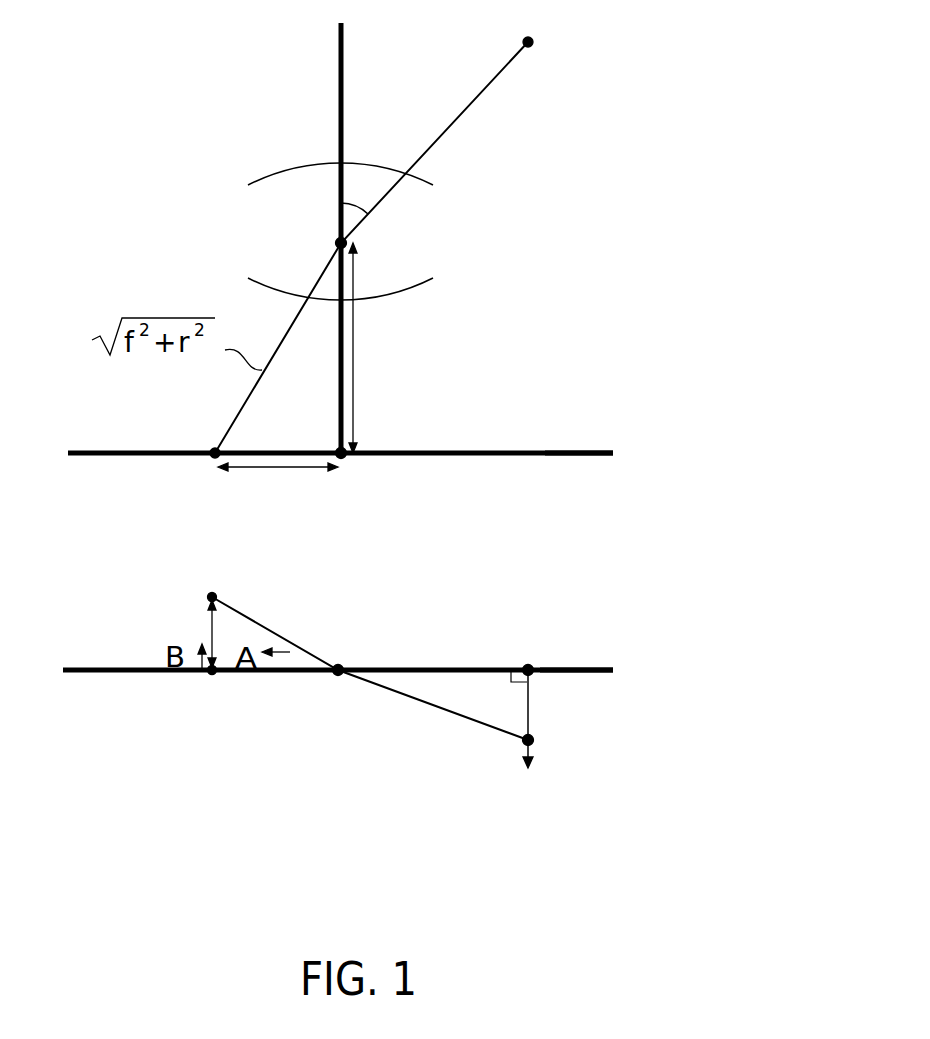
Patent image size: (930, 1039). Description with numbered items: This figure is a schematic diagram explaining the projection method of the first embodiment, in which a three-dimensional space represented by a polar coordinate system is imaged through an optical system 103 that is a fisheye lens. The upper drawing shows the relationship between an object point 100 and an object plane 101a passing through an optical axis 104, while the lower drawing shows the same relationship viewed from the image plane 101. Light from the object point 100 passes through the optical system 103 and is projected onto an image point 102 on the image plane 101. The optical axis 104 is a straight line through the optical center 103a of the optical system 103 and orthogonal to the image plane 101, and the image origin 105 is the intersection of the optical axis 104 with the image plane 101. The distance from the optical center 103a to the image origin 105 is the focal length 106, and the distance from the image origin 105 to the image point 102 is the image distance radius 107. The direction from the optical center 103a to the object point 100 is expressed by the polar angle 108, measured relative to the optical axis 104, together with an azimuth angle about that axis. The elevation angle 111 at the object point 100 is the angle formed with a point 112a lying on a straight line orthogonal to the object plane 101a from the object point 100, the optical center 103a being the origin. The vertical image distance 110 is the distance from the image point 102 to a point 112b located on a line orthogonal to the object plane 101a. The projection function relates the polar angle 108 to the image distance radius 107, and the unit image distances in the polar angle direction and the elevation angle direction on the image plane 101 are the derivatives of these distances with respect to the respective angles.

The object point 100 is at (533, 44).
The image plane 101 is at (467, 452).
The object plane 101a is at (612, 339).
The image point 102 is at (211, 449).
The optical system 103 is at (373, 165).
The optical center 103a is at (338, 244).
The optical axis 104 is at (340, 66).
The image origin 105 is at (346, 462).
The focal length 106 is at (356, 400).
The image distance radius 107 is at (266, 468).
The polar angle 108 is at (357, 220).
The vertical image distance 110 is at (210, 630).
The elevation angle 111 is at (372, 685).
The point located on a straight line orthogonal to the object plane from the object 112a is at (532, 748).
The point located on a straight line orthogonal to the object plane 112b is at (213, 596).